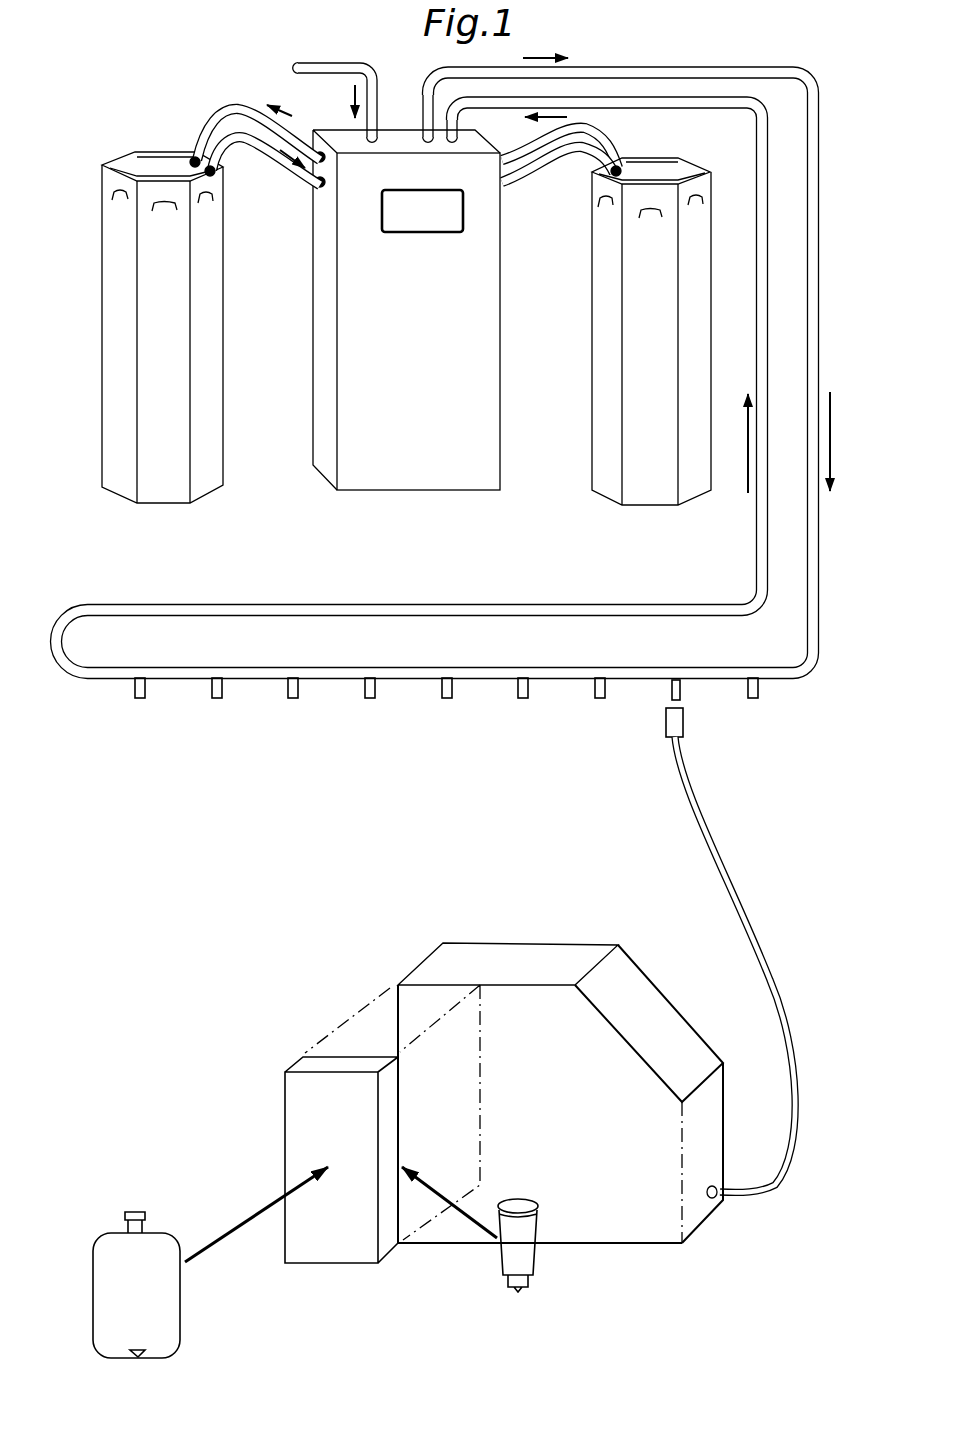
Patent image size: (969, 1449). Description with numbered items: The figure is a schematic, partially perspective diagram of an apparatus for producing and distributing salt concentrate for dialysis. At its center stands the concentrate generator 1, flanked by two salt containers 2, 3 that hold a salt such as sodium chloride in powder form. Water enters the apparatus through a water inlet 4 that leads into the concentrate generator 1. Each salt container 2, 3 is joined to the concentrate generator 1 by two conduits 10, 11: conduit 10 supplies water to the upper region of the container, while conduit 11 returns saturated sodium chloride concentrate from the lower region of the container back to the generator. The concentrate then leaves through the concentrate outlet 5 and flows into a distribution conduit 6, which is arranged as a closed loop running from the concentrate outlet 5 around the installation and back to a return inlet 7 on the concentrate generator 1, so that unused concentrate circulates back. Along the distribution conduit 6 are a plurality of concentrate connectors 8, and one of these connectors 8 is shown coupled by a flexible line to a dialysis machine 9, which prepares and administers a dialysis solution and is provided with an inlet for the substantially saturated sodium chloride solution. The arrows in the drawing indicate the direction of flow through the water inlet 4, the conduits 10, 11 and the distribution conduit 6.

The concentrate generator 1 is at (420, 490).
The salt container 2 is at (167, 495).
The salt container 3 is at (656, 500).
The water inlet 4 is at (300, 60).
The concentrate outlet 5 is at (458, 123).
The distribution conduit 6 is at (818, 366).
The return inlet 7 is at (423, 107).
The concentrate connector 8 is at (667, 693).
The dialysis machine 9 is at (522, 960).
The conduit 10 is at (203, 125).
The conduit 11 is at (277, 174).